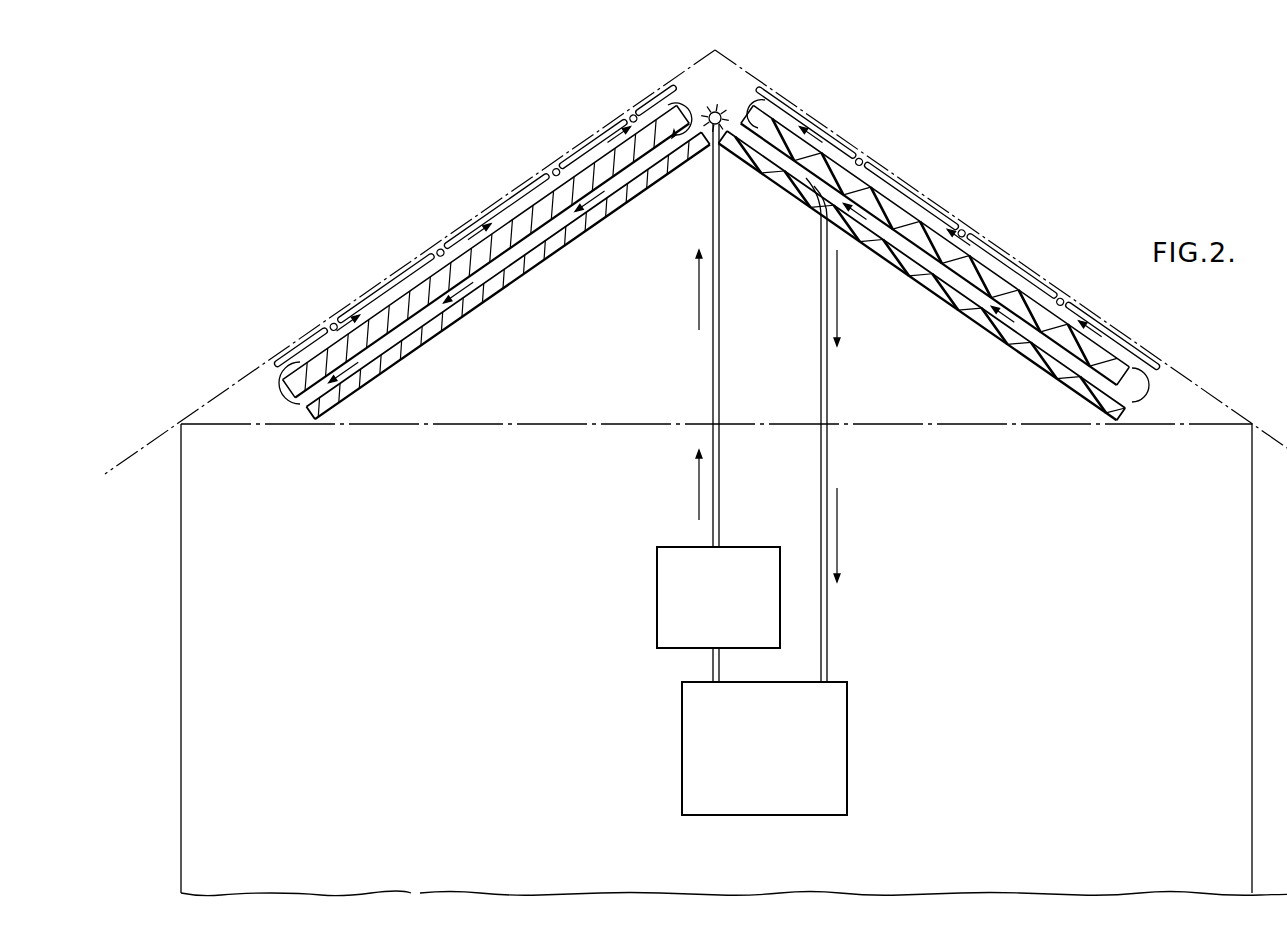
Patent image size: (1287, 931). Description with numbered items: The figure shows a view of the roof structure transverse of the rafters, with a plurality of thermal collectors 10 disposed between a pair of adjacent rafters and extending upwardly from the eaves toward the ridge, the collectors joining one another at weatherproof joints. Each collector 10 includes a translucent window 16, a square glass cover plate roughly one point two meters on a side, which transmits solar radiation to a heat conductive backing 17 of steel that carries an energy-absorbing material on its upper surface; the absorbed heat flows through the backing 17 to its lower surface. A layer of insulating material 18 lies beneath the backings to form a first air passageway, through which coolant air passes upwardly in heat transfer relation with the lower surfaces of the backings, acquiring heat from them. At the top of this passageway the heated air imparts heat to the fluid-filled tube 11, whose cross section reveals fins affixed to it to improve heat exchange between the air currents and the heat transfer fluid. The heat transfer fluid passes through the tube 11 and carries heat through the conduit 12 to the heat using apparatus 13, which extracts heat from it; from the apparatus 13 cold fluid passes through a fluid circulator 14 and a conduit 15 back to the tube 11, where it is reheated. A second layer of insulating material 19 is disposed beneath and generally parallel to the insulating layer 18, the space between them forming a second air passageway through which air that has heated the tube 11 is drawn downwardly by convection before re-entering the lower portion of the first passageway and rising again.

The thermal collector 10 is at (618, 113).
The fluid-filled tube 11 is at (719, 109).
The conduit 12 is at (828, 462).
The heat using apparatus 13 is at (682, 760).
The fluid circulator 14 is at (657, 588).
The conduit 15 is at (720, 492).
The translucent window 16 is at (648, 92).
The heat conductive backing 17 is at (633, 114).
The layer of insulating material 18 is at (277, 390).
The layer of insulating material 19 is at (383, 374).